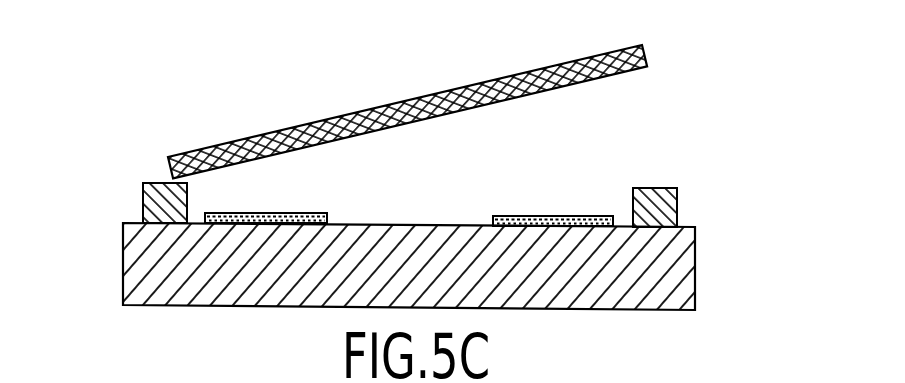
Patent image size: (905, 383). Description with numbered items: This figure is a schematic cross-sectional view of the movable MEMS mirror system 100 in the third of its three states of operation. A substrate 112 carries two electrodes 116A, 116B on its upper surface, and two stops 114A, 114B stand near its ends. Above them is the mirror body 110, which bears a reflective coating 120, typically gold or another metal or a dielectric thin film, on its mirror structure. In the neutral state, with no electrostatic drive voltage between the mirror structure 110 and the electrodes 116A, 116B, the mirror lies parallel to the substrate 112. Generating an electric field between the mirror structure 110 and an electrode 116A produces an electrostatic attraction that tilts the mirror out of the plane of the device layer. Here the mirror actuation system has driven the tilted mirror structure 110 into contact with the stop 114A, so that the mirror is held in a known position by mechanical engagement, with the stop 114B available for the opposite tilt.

The MEMS mirror system 100 is at (697, 67).
The mirror body 110 is at (631, 74).
The substrate 112 is at (697, 268).
The stop 114A is at (143, 197).
The stop 114B is at (677, 208).
The electrode 116A is at (293, 213).
The electrode 116B is at (552, 215).
The reflective coating 120 is at (237, 142).